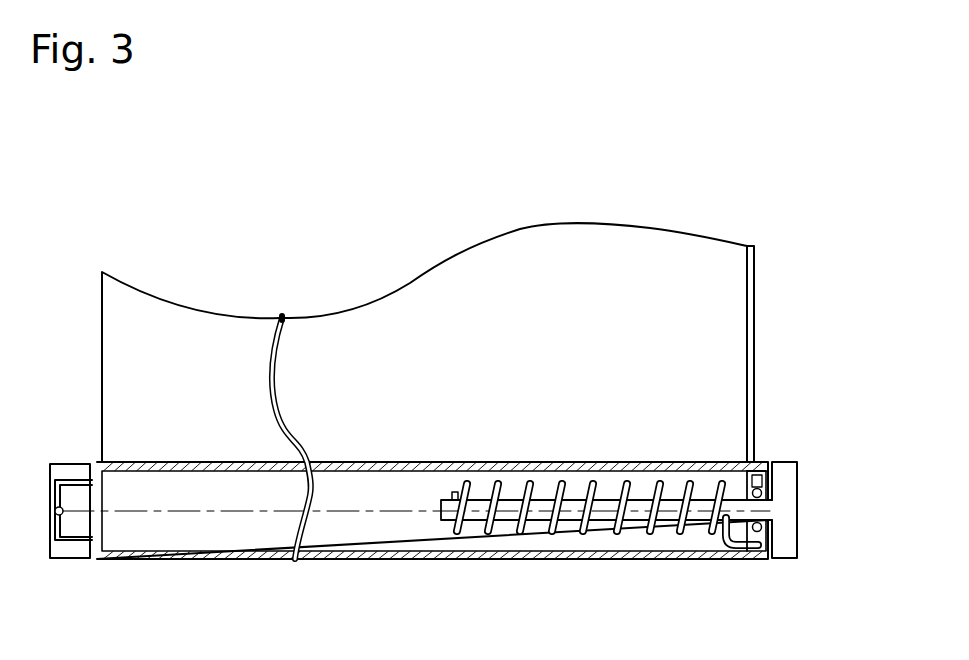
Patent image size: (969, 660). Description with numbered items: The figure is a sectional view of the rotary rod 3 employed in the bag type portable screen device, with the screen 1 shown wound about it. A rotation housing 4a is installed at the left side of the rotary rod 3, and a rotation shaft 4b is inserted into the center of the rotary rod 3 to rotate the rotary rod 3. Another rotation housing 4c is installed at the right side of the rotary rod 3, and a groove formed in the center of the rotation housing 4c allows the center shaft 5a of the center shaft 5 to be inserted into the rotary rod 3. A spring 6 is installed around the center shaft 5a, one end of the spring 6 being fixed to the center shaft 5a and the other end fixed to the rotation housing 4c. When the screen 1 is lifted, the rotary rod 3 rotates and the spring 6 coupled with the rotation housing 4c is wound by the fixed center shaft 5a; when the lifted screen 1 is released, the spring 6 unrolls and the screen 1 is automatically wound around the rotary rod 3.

The screen 1 is at (718, 357).
The rotary rod 3 is at (237, 558).
The rotation housing 4a is at (73, 525).
The rotation shaft 4b is at (82, 550).
The rotation housing 4c is at (762, 461).
The center shaft 5 is at (602, 513).
The center shaft 5a is at (447, 512).
The spring 6 is at (550, 533).